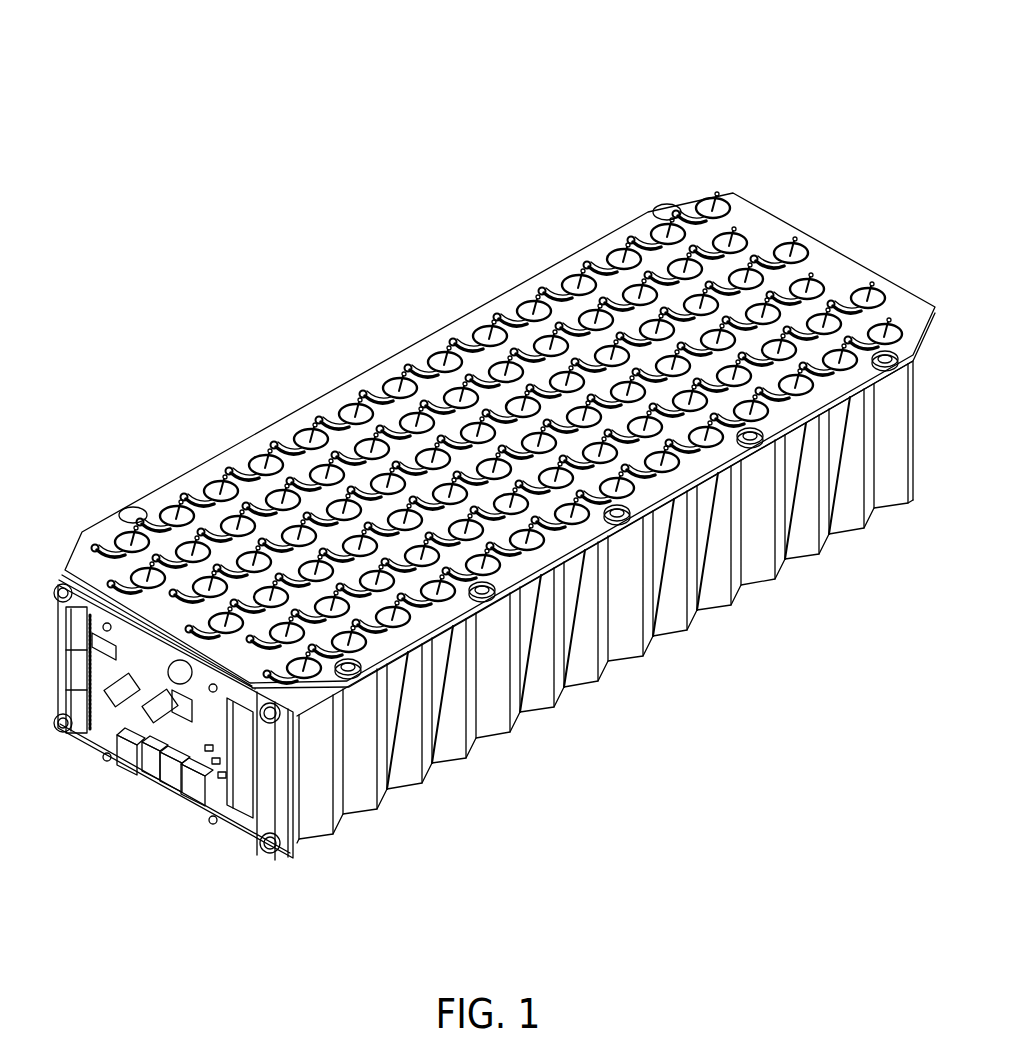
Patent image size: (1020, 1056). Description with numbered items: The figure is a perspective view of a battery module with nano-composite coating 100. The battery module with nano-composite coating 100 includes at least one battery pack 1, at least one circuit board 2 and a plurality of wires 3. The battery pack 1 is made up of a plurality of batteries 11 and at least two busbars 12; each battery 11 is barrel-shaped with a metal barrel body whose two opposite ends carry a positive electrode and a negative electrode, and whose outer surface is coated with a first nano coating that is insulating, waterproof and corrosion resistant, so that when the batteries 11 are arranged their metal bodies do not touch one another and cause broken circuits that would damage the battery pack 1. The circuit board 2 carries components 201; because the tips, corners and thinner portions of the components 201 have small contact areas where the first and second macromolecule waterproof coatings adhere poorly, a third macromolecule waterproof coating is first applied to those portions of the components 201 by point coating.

The battery module with nano-composite coating 100 is at (58, 40).
The battery pack 1 is at (497, 440).
The battery 11 is at (210, 376).
The busbar 12 is at (247, 455).
The wire 3 is at (173, 508).
The circuit board 2 is at (173, 726).
The component 201 is at (120, 748).